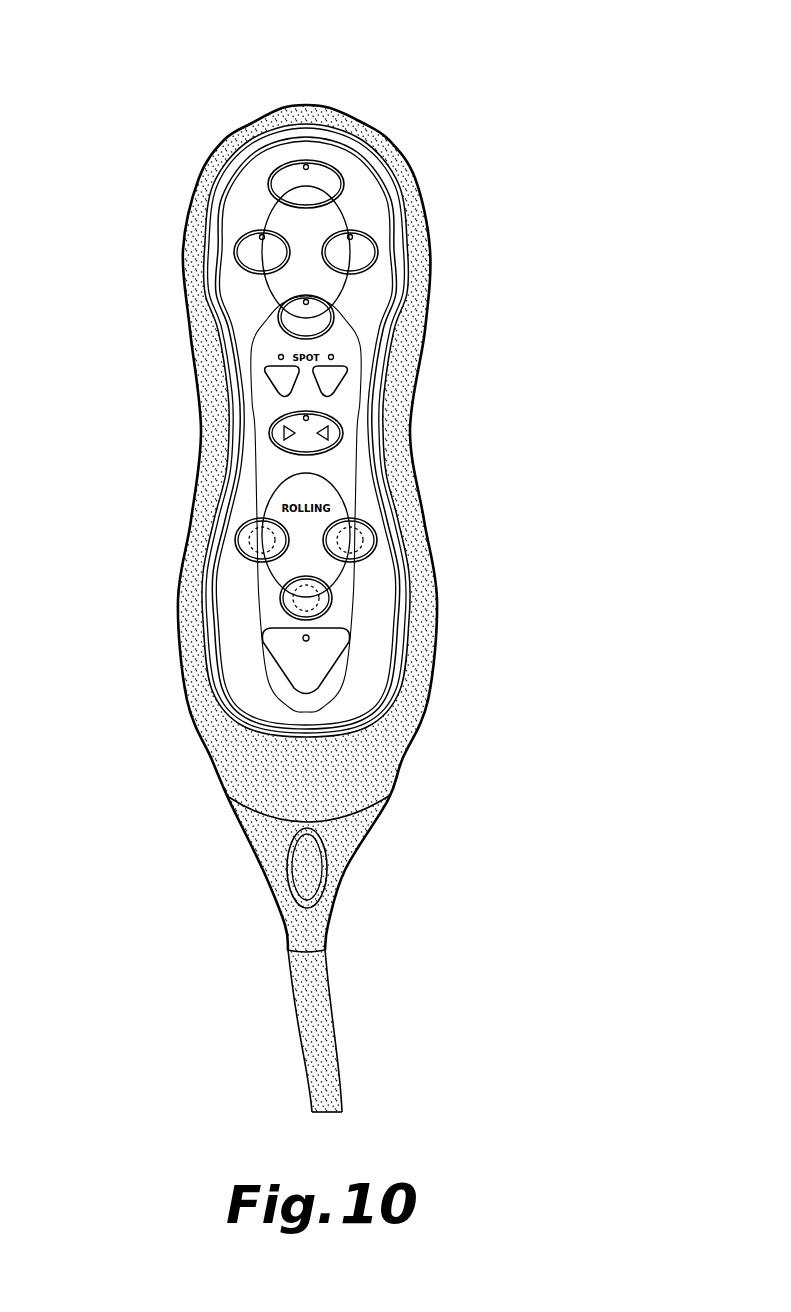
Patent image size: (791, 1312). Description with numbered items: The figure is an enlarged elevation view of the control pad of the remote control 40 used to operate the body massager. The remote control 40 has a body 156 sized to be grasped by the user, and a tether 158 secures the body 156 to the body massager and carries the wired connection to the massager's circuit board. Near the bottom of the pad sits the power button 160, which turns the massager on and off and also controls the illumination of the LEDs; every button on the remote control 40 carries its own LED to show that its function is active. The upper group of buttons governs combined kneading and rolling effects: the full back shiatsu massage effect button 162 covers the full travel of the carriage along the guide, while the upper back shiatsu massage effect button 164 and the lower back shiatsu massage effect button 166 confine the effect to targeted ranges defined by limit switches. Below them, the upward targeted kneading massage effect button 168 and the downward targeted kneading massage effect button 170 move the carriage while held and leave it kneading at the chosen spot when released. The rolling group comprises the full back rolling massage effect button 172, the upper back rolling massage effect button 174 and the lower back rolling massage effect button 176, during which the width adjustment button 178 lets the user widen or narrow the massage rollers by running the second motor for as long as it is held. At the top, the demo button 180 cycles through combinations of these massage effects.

The remote control 40 is at (393, 59).
The body 156 is at (406, 166).
The tether 158 is at (308, 1020).
The power button 160 is at (336, 672).
The full back shiatsu massage effect button 162 is at (242, 252).
The upper back shiatsu massage effect button 164 is at (365, 252).
The lower back shiatsu massage effect button 166 is at (330, 317).
The upward targeted kneading massage effect button 168 is at (275, 380).
The downward targeted kneading massage effect button 170 is at (336, 380).
The full back rolling massage effect button 172 is at (245, 540).
The upper back rolling massage effect button 174 is at (372, 540).
The lower back rolling massage effect button 176 is at (331, 600).
The width adjustment button 178 is at (342, 434).
The demo button 180 is at (304, 160).